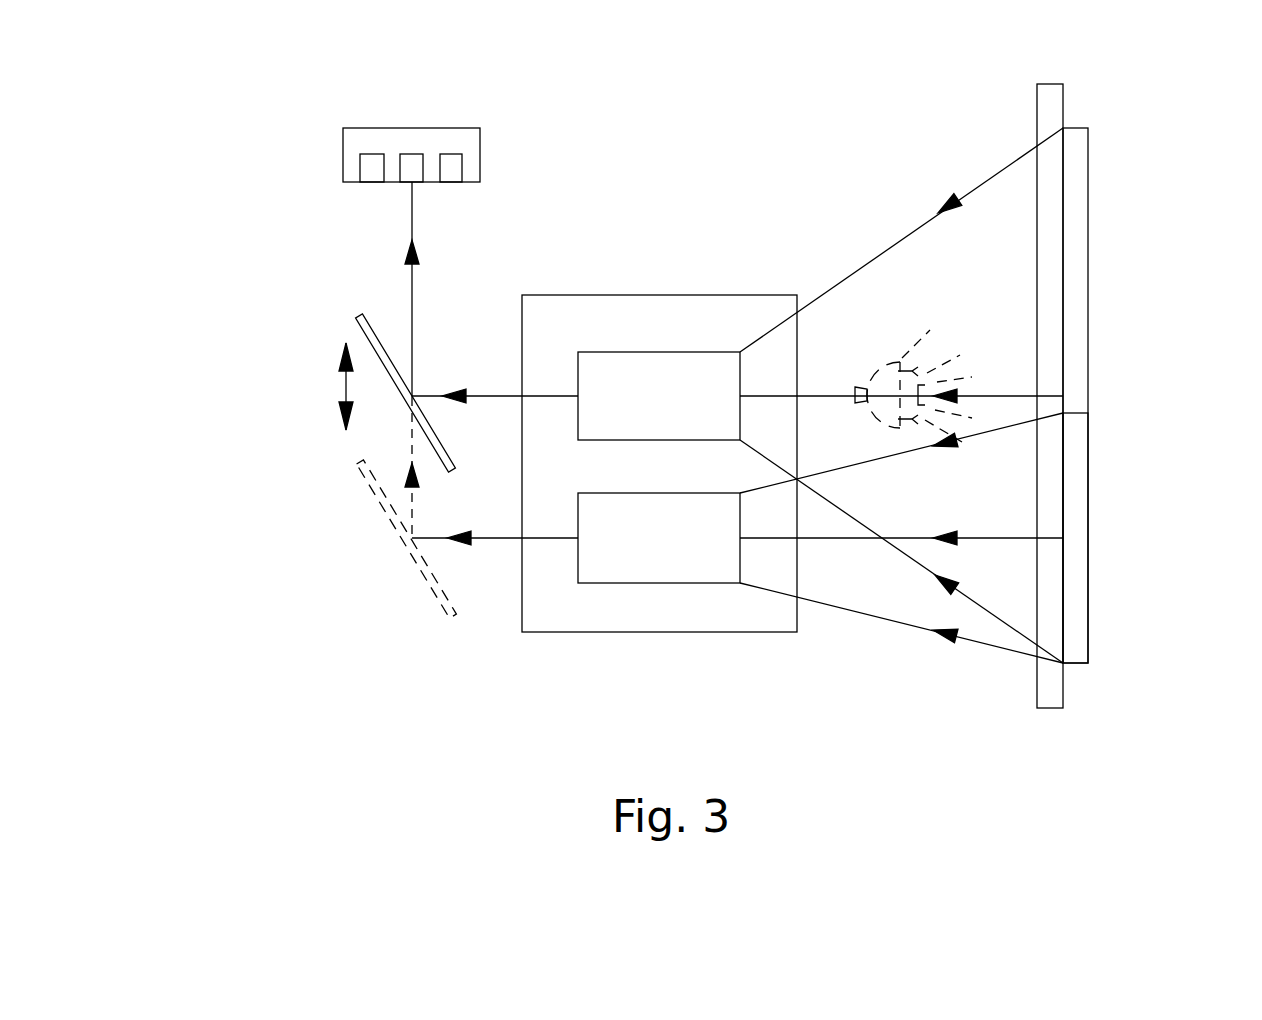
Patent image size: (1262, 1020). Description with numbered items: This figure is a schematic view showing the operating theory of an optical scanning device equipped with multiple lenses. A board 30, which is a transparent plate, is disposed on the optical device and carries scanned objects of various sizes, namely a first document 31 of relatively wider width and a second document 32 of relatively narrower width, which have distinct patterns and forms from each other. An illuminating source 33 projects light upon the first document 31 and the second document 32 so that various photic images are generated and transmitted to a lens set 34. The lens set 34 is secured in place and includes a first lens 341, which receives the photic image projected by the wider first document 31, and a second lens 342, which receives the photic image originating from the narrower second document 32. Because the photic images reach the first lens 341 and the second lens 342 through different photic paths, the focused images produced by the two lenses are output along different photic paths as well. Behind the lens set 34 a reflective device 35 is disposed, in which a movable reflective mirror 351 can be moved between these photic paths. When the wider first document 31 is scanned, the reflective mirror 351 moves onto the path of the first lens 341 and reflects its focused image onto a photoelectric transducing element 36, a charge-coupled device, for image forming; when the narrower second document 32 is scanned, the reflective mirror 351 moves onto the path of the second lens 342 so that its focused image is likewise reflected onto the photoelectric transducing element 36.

The board 30 is at (1063, 94).
The first document 31 is at (1067, 127).
The second document 32 is at (1078, 413).
The illuminating source 33 is at (905, 352).
The lens set 34 is at (682, 447).
The first lens 341 is at (663, 352).
The second lens 342 is at (663, 573).
The reflective device 35 is at (312, 481).
The reflective mirror 351 is at (355, 316).
The photoelectric transducing element 36 is at (480, 146).